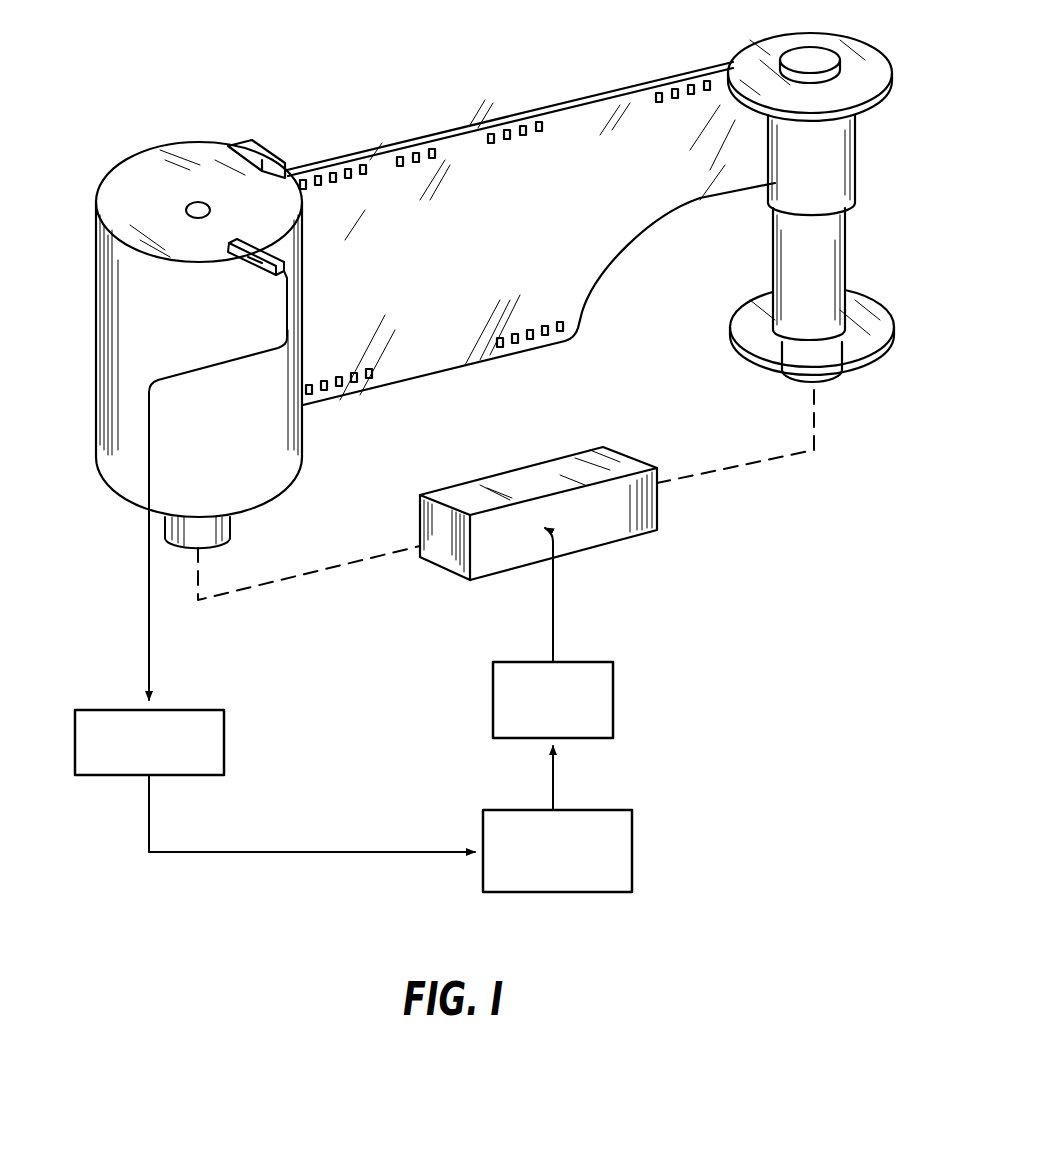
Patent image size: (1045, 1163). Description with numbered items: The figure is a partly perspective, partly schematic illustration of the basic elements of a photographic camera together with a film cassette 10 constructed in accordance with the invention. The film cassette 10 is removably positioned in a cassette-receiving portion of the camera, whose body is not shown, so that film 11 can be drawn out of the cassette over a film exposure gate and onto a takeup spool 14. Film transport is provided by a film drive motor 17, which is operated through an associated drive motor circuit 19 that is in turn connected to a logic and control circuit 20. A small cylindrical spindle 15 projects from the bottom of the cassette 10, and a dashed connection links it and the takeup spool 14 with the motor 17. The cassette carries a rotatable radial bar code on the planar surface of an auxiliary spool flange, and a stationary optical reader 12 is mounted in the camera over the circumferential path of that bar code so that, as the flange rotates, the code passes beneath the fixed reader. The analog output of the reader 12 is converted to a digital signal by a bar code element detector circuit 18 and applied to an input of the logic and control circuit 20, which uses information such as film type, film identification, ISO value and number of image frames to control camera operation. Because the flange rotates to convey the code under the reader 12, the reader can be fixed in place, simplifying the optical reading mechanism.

The film cassette 10 is at (95, 236).
The film 11 is at (600, 93).
The stationary optical reader 12 is at (246, 262).
The takeup spool 14 is at (782, 252).
The cassette spindle 15 is at (220, 540).
The film drive motor 17 is at (522, 480).
The bar code element detector circuit 18 is at (193, 710).
The drive motor circuit 19 is at (613, 696).
The logic and control circuit 20 is at (632, 848).